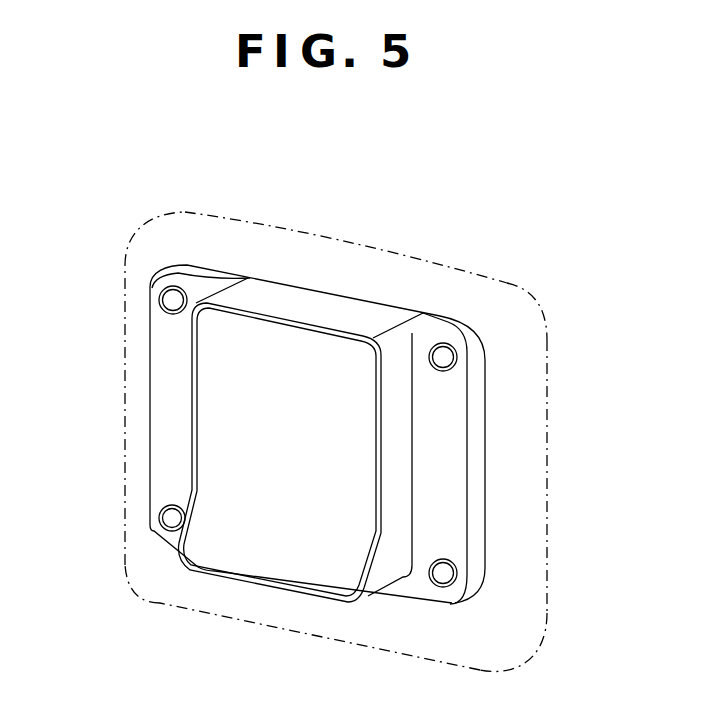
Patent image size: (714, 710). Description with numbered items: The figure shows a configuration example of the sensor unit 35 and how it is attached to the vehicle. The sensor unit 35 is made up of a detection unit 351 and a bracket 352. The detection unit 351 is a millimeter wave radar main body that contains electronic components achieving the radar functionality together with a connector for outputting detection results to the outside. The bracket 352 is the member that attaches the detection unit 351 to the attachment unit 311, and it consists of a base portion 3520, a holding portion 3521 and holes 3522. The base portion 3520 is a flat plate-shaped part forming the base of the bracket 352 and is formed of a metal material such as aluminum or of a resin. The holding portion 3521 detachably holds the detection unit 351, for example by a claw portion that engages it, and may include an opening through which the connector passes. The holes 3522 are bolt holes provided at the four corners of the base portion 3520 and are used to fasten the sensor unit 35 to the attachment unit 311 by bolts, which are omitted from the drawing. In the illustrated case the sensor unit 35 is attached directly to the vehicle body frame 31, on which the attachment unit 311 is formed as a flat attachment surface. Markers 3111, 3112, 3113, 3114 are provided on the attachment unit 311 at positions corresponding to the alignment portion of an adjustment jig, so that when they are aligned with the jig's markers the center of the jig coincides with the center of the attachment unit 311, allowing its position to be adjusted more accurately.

The vehicle body frame 31 is at (442, 186).
The attachment unit 311 is at (324, 287).
The marker 3111 is at (327, 264).
The marker 3112 is at (488, 475).
The marker 3113 is at (325, 628).
The marker 3114 is at (147, 401).
The sensor unit 35 is at (522, 254).
The detection unit 351 is at (302, 443).
The bracket 352 is at (135, 385).
The base portion 3520 is at (219, 271).
The holding portion 3521 is at (415, 421).
The holes 3522 is at (153, 281).